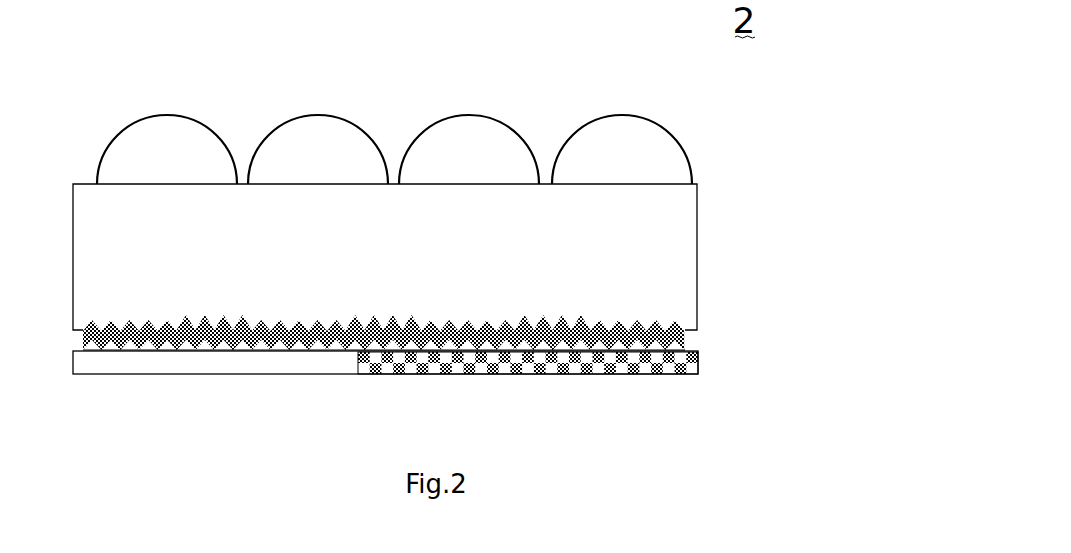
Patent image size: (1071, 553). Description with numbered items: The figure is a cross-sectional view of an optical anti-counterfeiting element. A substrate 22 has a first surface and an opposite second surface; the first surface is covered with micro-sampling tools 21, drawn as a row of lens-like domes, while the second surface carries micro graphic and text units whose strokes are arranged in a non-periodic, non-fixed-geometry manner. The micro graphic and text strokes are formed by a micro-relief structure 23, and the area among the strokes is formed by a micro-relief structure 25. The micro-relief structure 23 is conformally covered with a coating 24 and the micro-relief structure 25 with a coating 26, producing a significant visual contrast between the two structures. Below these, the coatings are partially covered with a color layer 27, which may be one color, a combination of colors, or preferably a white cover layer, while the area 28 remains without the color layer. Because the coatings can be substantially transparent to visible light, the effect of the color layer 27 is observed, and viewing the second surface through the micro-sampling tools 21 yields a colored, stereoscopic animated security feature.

The micro-sampling tools 21 is at (672, 160).
The substrate 22 is at (665, 253).
The micro-relief structure 23 is at (672, 323).
The coating 24 is at (685, 330).
The micro-relief structure 25 is at (547, 310).
The coating 26 is at (523, 320).
The color layer 27 is at (642, 367).
The area not covered with the color layer 28 is at (233, 367).